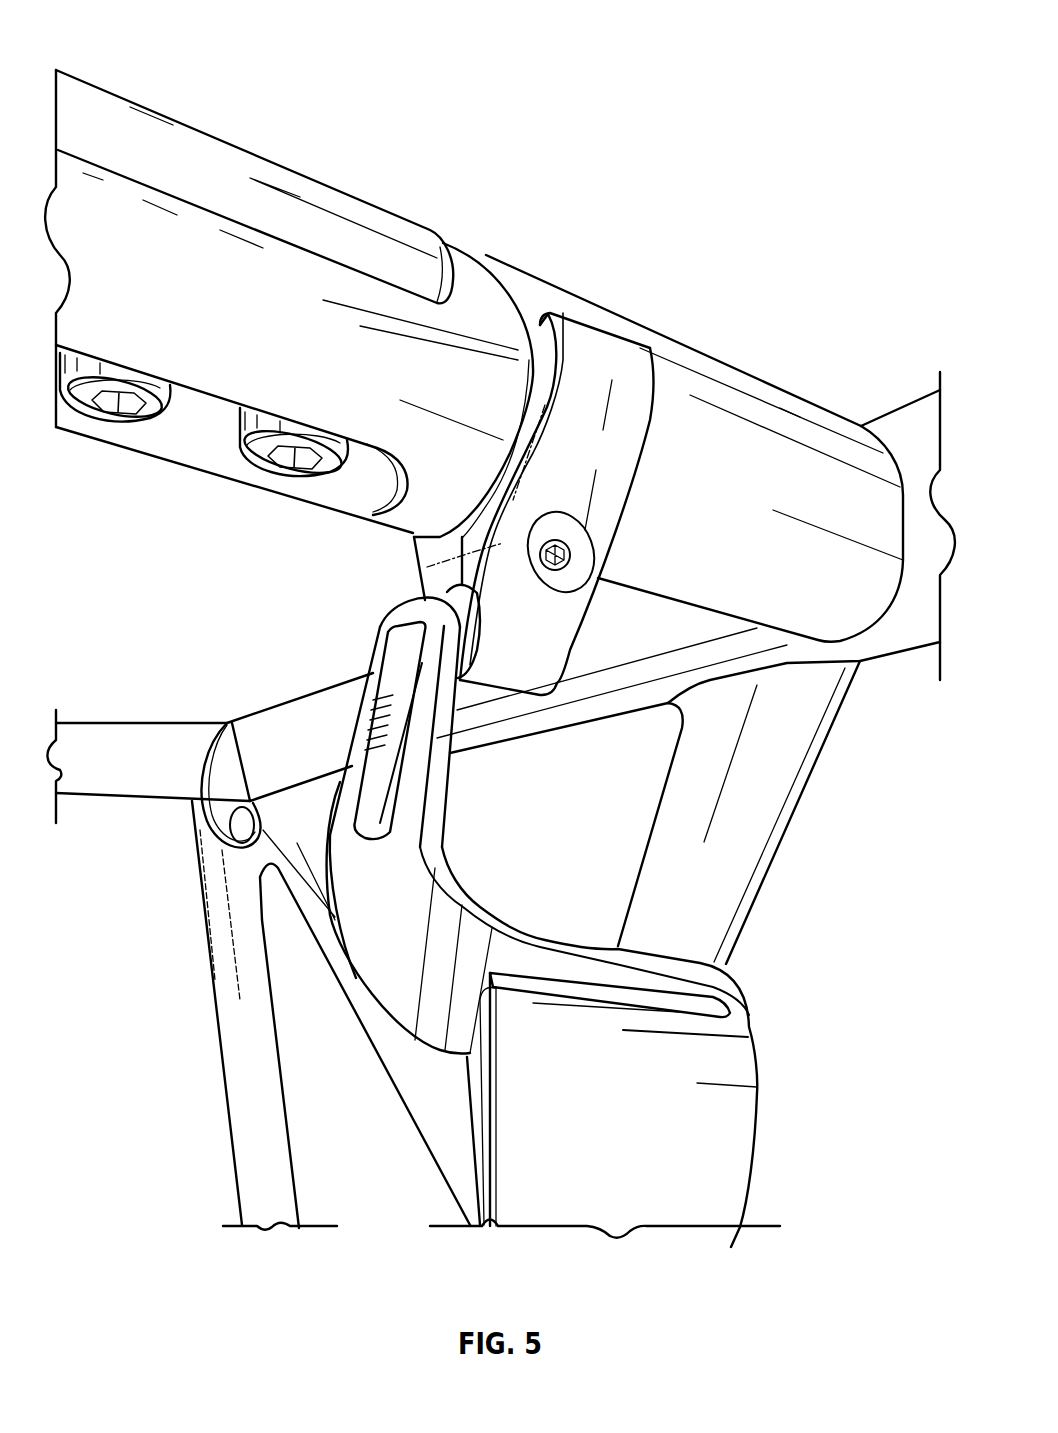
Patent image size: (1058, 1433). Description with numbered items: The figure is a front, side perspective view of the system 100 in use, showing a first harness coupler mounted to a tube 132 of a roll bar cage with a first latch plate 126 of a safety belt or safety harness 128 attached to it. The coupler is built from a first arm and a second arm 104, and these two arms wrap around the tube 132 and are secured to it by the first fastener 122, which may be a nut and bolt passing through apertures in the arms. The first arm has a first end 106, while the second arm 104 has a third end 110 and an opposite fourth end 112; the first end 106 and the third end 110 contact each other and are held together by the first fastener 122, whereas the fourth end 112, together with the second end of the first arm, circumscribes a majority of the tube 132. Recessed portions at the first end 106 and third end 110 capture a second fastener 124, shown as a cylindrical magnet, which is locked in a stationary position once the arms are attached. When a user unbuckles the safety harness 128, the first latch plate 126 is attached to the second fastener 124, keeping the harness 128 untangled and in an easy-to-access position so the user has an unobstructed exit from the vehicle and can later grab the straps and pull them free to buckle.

The system 100 is at (247, 43).
The second arm 104 is at (650, 355).
The first end 106 is at (420, 573).
The third end 110 is at (520, 670).
The fourth end 112 is at (607, 344).
The first fastener 122 is at (556, 572).
The second fastener 124 is at (460, 613).
The first latch plate 126 is at (373, 953).
The safety harness 128 is at (717, 1110).
The tube 132 is at (775, 401).